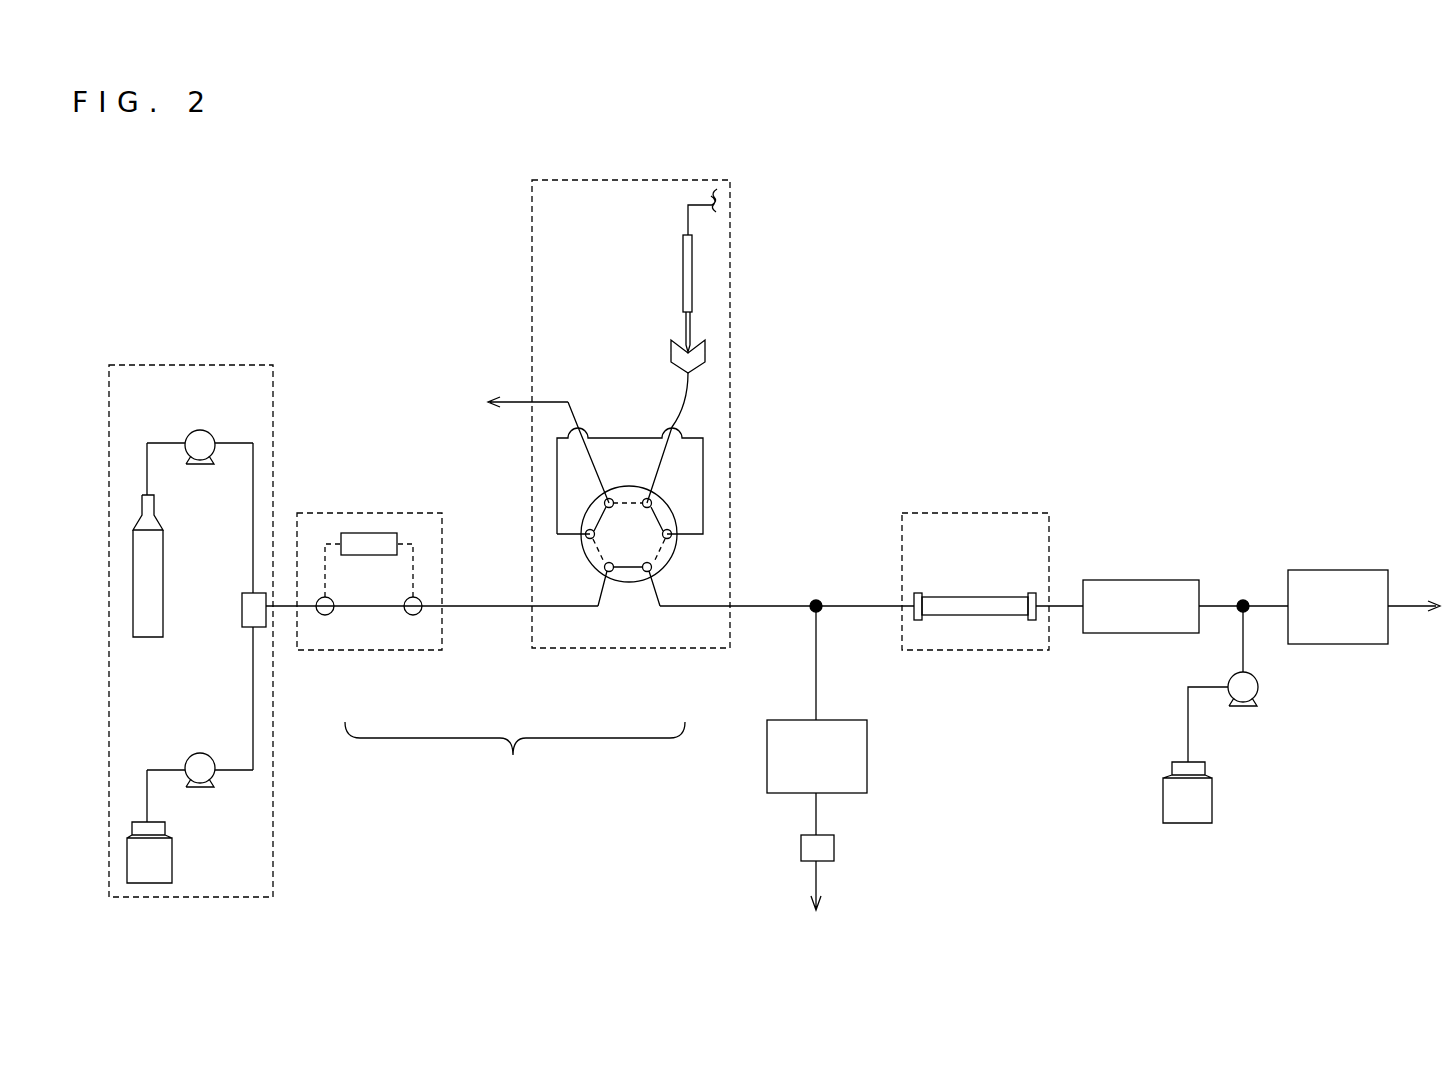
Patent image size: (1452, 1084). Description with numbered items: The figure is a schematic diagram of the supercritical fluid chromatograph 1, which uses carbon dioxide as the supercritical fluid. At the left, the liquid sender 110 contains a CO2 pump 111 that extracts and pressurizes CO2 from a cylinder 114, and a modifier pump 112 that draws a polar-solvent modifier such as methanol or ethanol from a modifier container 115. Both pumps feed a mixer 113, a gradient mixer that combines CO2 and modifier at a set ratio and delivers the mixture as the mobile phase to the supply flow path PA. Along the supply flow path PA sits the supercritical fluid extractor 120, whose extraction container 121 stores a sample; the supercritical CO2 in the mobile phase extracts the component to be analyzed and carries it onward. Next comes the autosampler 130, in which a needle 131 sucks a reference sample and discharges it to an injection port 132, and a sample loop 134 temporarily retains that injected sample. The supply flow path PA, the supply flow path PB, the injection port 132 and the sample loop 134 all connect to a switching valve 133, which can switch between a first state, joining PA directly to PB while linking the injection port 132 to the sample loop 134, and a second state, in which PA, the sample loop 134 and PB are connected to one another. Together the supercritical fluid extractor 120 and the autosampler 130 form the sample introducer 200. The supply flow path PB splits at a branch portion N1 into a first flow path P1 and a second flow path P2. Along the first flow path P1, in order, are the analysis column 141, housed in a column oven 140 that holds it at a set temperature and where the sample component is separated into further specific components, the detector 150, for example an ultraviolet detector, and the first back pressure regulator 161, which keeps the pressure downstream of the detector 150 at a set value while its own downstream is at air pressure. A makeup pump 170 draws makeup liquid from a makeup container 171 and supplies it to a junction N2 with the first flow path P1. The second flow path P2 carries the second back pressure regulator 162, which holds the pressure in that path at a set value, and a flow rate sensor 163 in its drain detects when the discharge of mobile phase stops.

The supercritical fluid chromatograph 1 is at (293, 243).
The liquid sender 110 is at (233, 364).
The CO2 pump 111 is at (195, 430).
The modifier pump 112 is at (190, 752).
The mixer 113 is at (242, 610).
The cylinder 114 is at (166, 582).
The modifier container 115 is at (173, 866).
The supercritical fluid extractor 120 is at (385, 651).
The extraction container 121 is at (378, 533).
The autosampler 130 is at (660, 651).
The needle 131 is at (683, 260).
The injection port 132 is at (670, 343).
The switching valve 133 is at (667, 510).
The sample loop 134 is at (627, 437).
The column oven 140 is at (1018, 512).
The analysis column 141 is at (952, 597).
The detector 150 is at (1128, 580).
The first back pressure regulator 161 is at (1300, 570).
The second back pressure regulator 162 is at (766, 760).
The flow rate sensor 163 is at (828, 835).
The makeup pump 170 is at (1258, 687).
The makeup container 171 is at (1213, 790).
The sample introducer 200 is at (515, 759).
The supply flow path PA is at (459, 605).
The supply flow path PB is at (745, 605).
The first flow path P1 is at (845, 598).
The second flow path P2 is at (803, 631).
The branch portion N1 is at (822, 611).
The junction N2 is at (1243, 598).